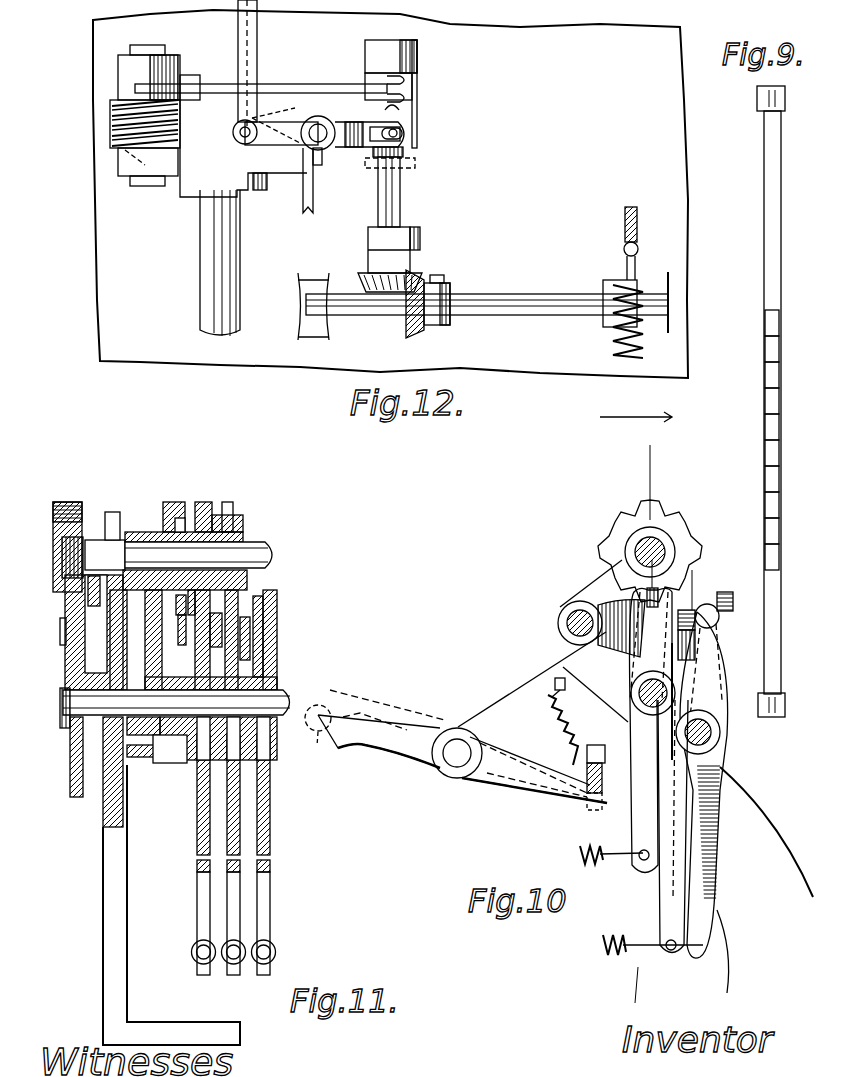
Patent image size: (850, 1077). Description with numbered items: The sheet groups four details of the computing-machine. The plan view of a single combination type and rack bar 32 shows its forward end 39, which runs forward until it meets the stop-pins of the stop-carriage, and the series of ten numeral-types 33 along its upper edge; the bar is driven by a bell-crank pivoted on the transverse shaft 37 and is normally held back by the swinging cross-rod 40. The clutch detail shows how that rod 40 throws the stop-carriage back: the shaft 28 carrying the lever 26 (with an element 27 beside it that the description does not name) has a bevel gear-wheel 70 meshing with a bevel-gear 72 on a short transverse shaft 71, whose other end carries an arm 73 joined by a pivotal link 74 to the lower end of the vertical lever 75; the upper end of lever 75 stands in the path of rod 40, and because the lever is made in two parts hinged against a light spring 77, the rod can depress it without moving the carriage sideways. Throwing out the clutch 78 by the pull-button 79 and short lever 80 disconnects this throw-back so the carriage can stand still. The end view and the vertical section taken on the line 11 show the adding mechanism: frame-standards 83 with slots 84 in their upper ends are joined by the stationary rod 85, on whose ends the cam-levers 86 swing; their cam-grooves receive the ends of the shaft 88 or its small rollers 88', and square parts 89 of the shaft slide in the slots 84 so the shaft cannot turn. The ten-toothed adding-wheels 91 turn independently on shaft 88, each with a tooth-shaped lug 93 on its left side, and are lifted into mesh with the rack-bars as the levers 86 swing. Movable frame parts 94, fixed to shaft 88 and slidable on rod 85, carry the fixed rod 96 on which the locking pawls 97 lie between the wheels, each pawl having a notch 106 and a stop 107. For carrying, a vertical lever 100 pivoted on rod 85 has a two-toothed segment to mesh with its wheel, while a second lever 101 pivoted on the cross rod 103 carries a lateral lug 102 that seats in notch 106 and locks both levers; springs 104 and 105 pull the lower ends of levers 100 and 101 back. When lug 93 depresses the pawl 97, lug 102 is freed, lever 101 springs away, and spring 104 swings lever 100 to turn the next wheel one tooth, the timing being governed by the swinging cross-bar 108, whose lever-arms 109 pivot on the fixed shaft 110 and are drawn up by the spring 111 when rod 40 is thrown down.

In FIG. 10, the section line 11 is at (636, 717).
In FIG. 12, the lever 26 is at (622, 214).
In FIG. 12, the spring 27 is at (620, 342).
In FIG. 12, the shaft 28 is at (487, 298).
In FIG. 9, the type and rack bar 32 is at (757, 402).
In FIG. 9, the numeral-types 33 is at (766, 428).
In FIG. 12, the transverse shaft 37 is at (213, 283).
In FIG. 9, the forward end 39 is at (765, 97).
In FIG. 10, the cross-rod 40 is at (318, 737).
In FIG. 12, the bevel gear-wheel 70 is at (436, 327).
In FIG. 12, the short shaft 71 is at (402, 204).
In FIG. 12, the bevel-gear 72 is at (383, 262).
In FIG. 12, the arm 73 is at (410, 87).
In FIG. 12, the pivotal link 74 is at (297, 90).
In FIG. 12, the vertical lever 75 is at (147, 89).
In FIG. 12, the light spring 77 is at (112, 128).
In FIG. 12, the clutch 78 is at (418, 125).
In FIG. 12, the pull-button 79 is at (259, 36).
In FIG. 12, the short lever 80 is at (284, 125).
In FIG. 11, the frame-standard 83 is at (102, 773).
In FIG. 11, the slot 84 is at (110, 515).
In FIG. 11, the stationary rod 85 is at (290, 690).
In FIG. 10, the stationary rod 85 is at (631, 694).
In FIG. 11, the cam-lever 86 is at (68, 503).
In FIG. 11, the shaft 88 is at (214, 539).
In FIG. 10, the shaft 88 is at (627, 544).
In FIG. 11, the small roller 88' is at (45, 557).
In FIG. 11, the square part 89 is at (110, 552).
In FIG. 11, the adding-wheel 91 is at (183, 503).
In FIG. 10, the adding-wheel 91 is at (676, 537).
In FIG. 11, the lug 93 is at (215, 505).
In FIG. 10, the lug 93 is at (590, 585).
In FIG. 11, the movable frame part 94 is at (171, 905).
In FIG. 10, the fixed rod 96 is at (565, 623).
In FIG. 11, the locking pawl 97 is at (178, 640).
In FIG. 10, the locking pawl 97 is at (636, 660).
In FIG. 11, the vertical lever 100 is at (268, 652).
In FIG. 10, the vertical lever 100 is at (633, 765).
In FIG. 11, the second vertical lever 101 is at (270, 890).
In FIG. 10, the second vertical lever 101 is at (678, 798).
In FIG. 11, the lateral lug 102 is at (176, 612).
In FIG. 10, the lateral lug 102 is at (722, 636).
In FIG. 10, the cross rod 103 is at (720, 750).
In FIG. 10, the spring 104 is at (580, 854).
In FIG. 11, the spring 105 is at (278, 944).
In FIG. 10, the spring 105 is at (603, 948).
In FIG. 10, the notch 106 is at (690, 608).
In FIG. 10, the stop 107 is at (733, 600).
In FIG. 10, the swinging cross-bar 108 is at (587, 790).
In FIG. 10, the lever-arm 109 is at (392, 740).
In FIG. 10, the fixed shaft 110 is at (450, 758).
In FIG. 10, the spring 111 is at (548, 727).